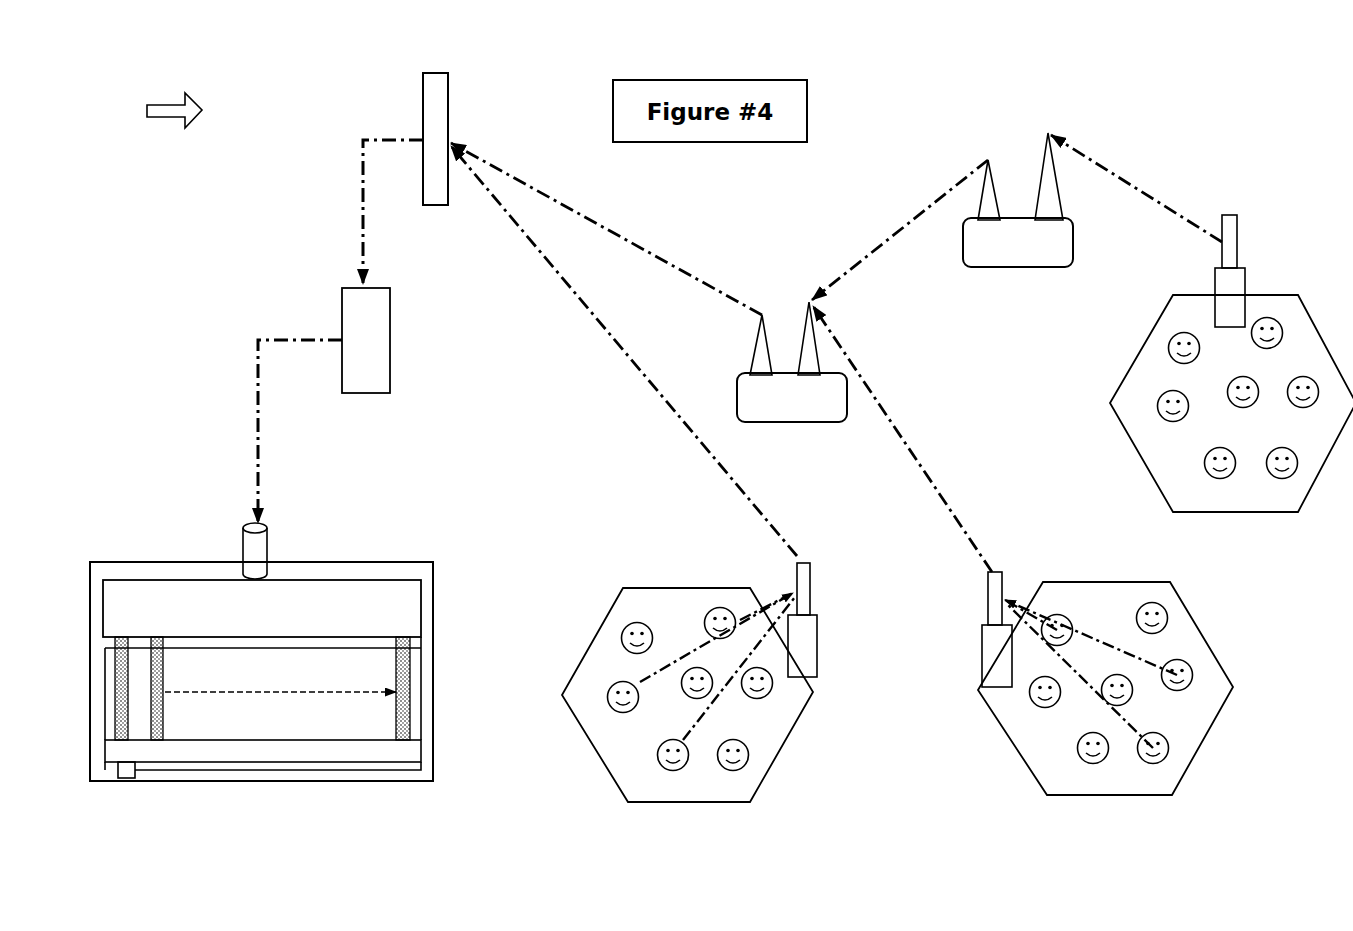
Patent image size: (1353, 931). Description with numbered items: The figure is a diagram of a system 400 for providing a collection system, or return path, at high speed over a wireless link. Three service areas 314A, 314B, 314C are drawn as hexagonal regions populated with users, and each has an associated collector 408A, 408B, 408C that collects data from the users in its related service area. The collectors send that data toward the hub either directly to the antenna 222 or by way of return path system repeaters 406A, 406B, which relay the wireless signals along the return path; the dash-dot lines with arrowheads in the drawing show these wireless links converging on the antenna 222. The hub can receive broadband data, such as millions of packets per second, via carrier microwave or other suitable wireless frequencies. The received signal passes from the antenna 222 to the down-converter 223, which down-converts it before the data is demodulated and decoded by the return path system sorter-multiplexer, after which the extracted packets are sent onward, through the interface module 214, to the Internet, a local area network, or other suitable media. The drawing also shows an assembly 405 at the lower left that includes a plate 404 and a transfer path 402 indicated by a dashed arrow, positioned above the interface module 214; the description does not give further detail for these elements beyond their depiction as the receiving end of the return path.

The system 400 is at (174, 94).
The antenna 222 is at (413, 139).
The down-converter 223 is at (366, 340).
The power storage assembly 405 is at (261, 652).
The upper plate 404 is at (262, 608).
The transfer path 402 is at (280, 687).
The interface module 214 is at (123, 791).
The return path system repeater 406A is at (792, 383).
The return path system repeater 406B is at (1018, 219).
The collector 408A is at (830, 620).
The collector 408B is at (967, 629).
The collector 408C is at (1256, 271).
The service area 314A is at (687, 695).
The service area 314B is at (1105, 689).
The service area 314C is at (1231, 404).